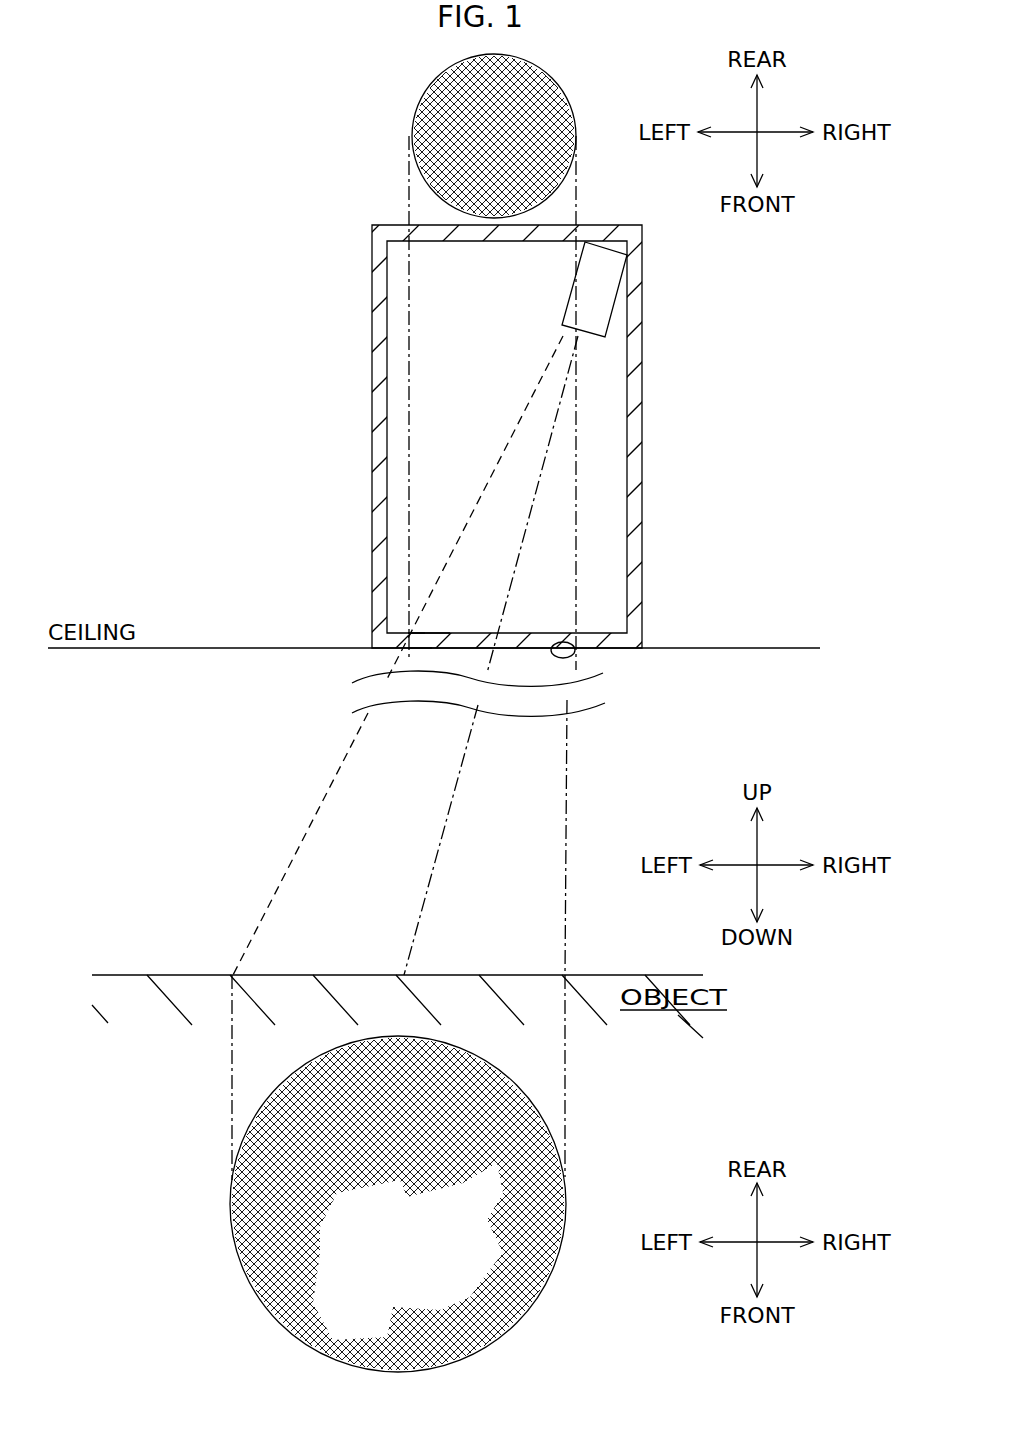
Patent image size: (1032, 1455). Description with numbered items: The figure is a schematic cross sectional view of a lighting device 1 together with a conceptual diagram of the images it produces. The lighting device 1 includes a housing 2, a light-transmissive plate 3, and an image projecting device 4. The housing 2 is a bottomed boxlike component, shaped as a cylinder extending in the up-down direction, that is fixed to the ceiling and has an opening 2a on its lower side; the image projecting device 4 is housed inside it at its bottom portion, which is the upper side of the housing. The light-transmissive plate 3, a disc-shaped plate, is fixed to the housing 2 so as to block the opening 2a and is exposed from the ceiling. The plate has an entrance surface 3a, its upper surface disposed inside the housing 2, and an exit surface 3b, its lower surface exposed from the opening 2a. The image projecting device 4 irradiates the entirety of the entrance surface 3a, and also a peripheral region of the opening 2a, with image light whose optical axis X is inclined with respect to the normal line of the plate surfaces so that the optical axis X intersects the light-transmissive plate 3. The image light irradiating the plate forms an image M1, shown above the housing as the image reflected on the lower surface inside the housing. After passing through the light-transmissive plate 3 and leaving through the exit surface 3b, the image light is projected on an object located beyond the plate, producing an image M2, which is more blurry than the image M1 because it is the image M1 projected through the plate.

The lighting device 1 is at (262, 228).
The housing 2 is at (633, 397).
The opening 2a is at (575, 656).
The light-transmissive plate 3 is at (450, 638).
The entrance surface 3a is at (433, 625).
The exit surface 3b is at (432, 652).
The image projecting device 4 is at (612, 273).
The optical axis X is at (440, 842).
The image M1 is at (413, 117).
The image M2 is at (230, 1212).